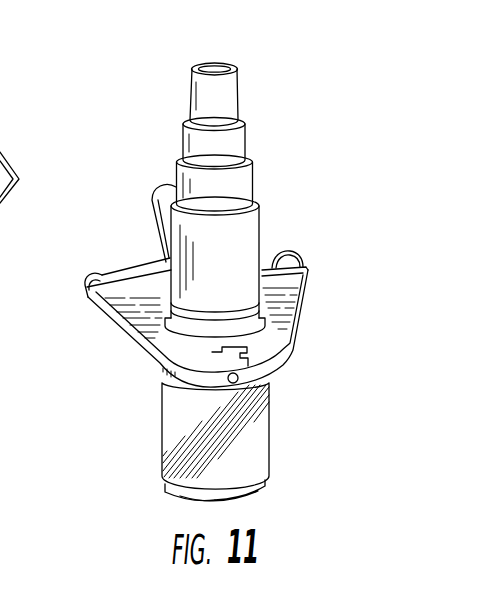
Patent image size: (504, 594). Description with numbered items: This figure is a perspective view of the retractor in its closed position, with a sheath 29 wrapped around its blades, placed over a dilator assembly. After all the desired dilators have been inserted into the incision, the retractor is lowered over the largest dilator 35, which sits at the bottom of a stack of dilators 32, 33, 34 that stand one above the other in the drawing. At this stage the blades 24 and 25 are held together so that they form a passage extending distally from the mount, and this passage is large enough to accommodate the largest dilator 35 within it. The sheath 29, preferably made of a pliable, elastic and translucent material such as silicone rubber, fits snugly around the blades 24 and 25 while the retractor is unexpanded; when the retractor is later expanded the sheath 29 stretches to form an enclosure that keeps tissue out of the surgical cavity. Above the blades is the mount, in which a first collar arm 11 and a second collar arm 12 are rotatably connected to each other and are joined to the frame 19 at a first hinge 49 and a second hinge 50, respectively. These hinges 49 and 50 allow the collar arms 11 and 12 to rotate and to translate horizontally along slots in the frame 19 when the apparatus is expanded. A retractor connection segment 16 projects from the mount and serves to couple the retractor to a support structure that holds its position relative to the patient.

The first collar arm 11 is at (194, 365).
The second collar arm 12 is at (274, 356).
The retractor connection segment 16 is at (163, 188).
The frame 19 is at (146, 264).
The blade 24 is at (186, 492).
The blade 25 is at (258, 487).
The sheath 29 is at (273, 444).
The first telescoping section 32 is at (226, 108).
The second telescoping section 33 is at (231, 158).
The third telescoping section 34 is at (236, 205).
The largest dilator 35 is at (241, 258).
The first hinge 49 is at (78, 287).
The second hinge 50 is at (287, 242).